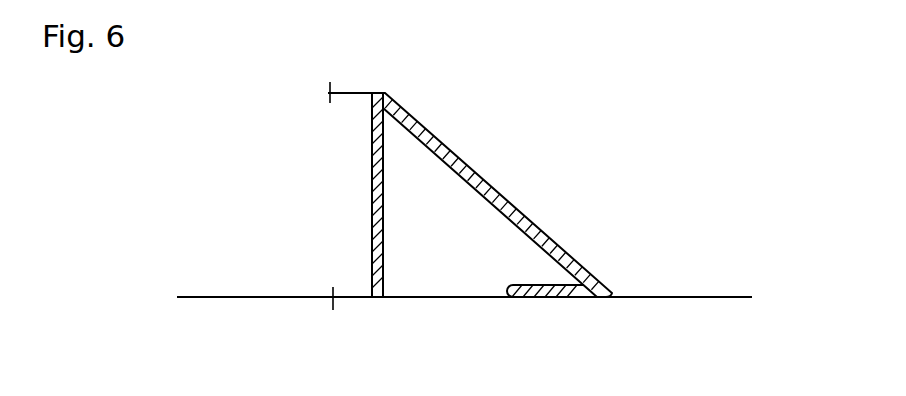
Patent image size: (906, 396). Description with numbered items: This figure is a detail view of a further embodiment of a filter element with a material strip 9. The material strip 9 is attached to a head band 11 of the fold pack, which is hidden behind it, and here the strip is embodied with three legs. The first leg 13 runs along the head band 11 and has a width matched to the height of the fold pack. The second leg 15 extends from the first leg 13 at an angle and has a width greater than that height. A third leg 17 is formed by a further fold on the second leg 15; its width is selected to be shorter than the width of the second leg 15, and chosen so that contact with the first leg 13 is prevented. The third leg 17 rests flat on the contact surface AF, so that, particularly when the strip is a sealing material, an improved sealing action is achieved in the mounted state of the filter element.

The material strip 9 is at (612, 222).
The head band 11 is at (371, 218).
The first leg 13 is at (383, 274).
The second leg 15 is at (503, 198).
The third leg 17 is at (543, 297).
The contact surface AF is at (730, 299).